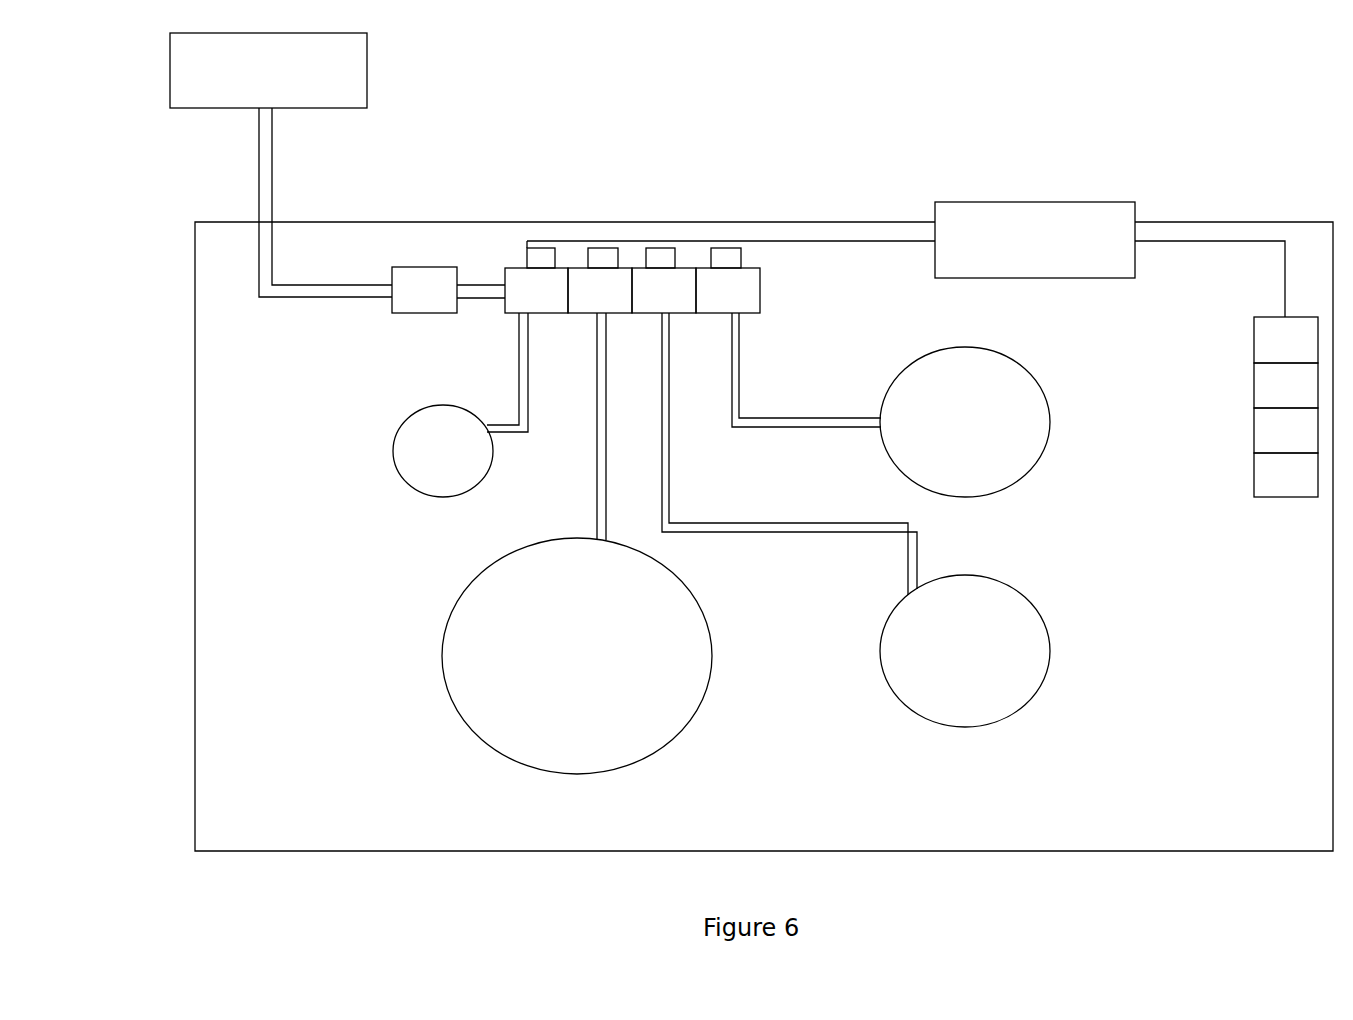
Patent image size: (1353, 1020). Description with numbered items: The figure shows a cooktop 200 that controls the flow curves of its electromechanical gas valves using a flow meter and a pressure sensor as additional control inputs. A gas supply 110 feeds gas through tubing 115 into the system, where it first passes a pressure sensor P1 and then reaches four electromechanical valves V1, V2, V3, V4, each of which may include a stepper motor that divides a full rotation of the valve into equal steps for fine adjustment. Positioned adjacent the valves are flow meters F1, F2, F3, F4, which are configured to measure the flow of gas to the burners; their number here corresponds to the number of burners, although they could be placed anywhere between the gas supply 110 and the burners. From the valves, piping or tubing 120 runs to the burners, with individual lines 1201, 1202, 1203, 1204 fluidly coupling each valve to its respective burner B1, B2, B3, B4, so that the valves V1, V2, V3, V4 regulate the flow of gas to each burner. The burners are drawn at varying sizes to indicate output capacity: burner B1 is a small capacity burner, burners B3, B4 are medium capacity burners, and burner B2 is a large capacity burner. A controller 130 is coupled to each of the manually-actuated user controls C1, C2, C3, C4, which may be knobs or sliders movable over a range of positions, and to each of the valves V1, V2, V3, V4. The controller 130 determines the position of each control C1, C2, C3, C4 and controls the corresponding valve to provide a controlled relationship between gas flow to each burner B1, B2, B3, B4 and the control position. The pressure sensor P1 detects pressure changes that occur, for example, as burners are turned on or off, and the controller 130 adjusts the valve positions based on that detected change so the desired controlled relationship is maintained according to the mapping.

The cooktop 200 is at (1143, 152).
The gas supply 110 is at (289, 99).
The tubing 115 is at (266, 207).
The controller 130 is at (1014, 270).
The piping or tubing 120 is at (663, 466).
The piping or tubing 1201 is at (527, 377).
The piping or tubing 1202 is at (600, 523).
The piping or tubing 1203 is at (883, 533).
The piping or tubing 1204 is at (845, 427).
The pressure sensor P1 is at (448, 290).
The electromechanical valve V1 is at (536, 290).
The electromechanical valve V2 is at (600, 290).
The electromechanical valve V3 is at (664, 290).
The electromechanical valve V4 is at (728, 290).
The flow meter F1 is at (537, 257).
The flow meter F2 is at (600, 257).
The flow meter F3 is at (655, 257).
The flow meter F4 is at (720, 257).
The manually-actuated user control C1 is at (1286, 340).
The manually-actuated user control C2 is at (1286, 385).
The manually-actuated user control C3 is at (1286, 430).
The manually-actuated user control C4 is at (1286, 475).
The burner B1 is at (443, 451).
The burner B2 is at (577, 656).
The burner B3 is at (965, 422).
The burner B4 is at (965, 651).